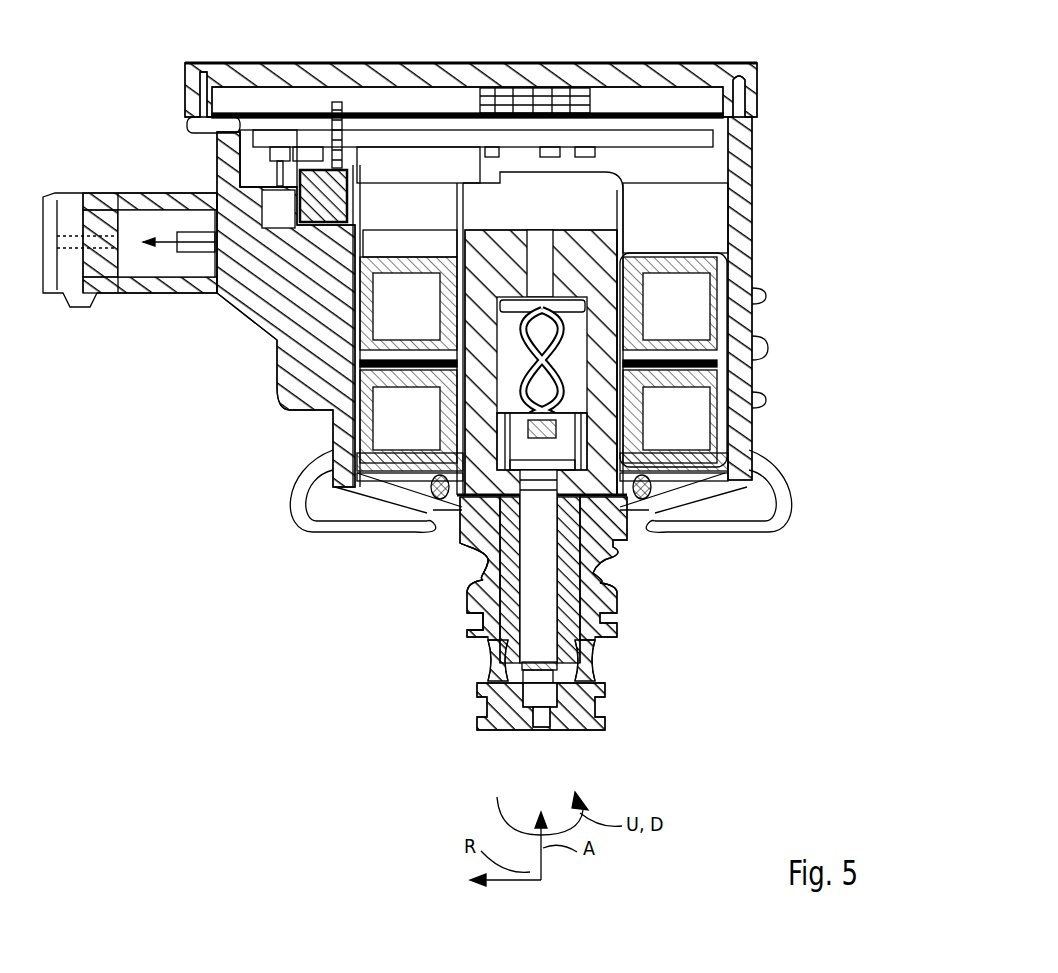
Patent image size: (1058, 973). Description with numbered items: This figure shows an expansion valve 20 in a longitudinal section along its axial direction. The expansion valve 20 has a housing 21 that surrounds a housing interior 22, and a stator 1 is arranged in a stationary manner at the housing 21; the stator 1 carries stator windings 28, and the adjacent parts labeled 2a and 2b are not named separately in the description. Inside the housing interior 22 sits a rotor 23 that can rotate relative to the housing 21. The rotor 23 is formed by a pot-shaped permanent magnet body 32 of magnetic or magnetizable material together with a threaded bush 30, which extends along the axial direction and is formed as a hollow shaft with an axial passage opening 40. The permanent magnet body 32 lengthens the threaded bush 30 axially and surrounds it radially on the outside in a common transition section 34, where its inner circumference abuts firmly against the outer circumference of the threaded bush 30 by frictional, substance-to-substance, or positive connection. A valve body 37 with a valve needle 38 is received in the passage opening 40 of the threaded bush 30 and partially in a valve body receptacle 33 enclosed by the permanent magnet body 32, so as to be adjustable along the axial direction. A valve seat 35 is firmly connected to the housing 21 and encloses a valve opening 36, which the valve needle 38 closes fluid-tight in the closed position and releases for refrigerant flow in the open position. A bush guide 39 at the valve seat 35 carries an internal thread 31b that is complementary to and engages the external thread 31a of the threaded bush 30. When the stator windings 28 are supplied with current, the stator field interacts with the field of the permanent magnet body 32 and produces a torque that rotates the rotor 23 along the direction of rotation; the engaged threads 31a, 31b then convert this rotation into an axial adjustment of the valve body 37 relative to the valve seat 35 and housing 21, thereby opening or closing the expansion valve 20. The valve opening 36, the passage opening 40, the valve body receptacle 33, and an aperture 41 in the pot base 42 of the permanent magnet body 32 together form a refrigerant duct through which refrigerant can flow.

The stator 1 is at (800, 342).
The first rib 2a is at (748, 400).
The second rib 2b is at (748, 292).
The expansion valve 20 is at (834, 148).
The housing 21 is at (262, 372).
The housing interior 22 is at (703, 231).
The rotor 23 is at (511, 228).
The stator windings 28 is at (684, 311).
The threaded bush 30 is at (545, 589).
The external thread 31a is at (488, 543).
The internal thread 31b is at (498, 580).
The permanent magnet body 32 is at (606, 220).
The valve body receptacle 33 is at (505, 325).
The transition section 34 is at (595, 457).
The valve seat 35 is at (513, 702).
The valve opening 36 is at (541, 712).
The valve body 37 is at (601, 576).
The valve needle 38 is at (545, 616).
The bush guide 39 is at (488, 622).
The passage opening 40 is at (508, 647).
The aperture 41 is at (544, 250).
The pot base 42 is at (580, 250).